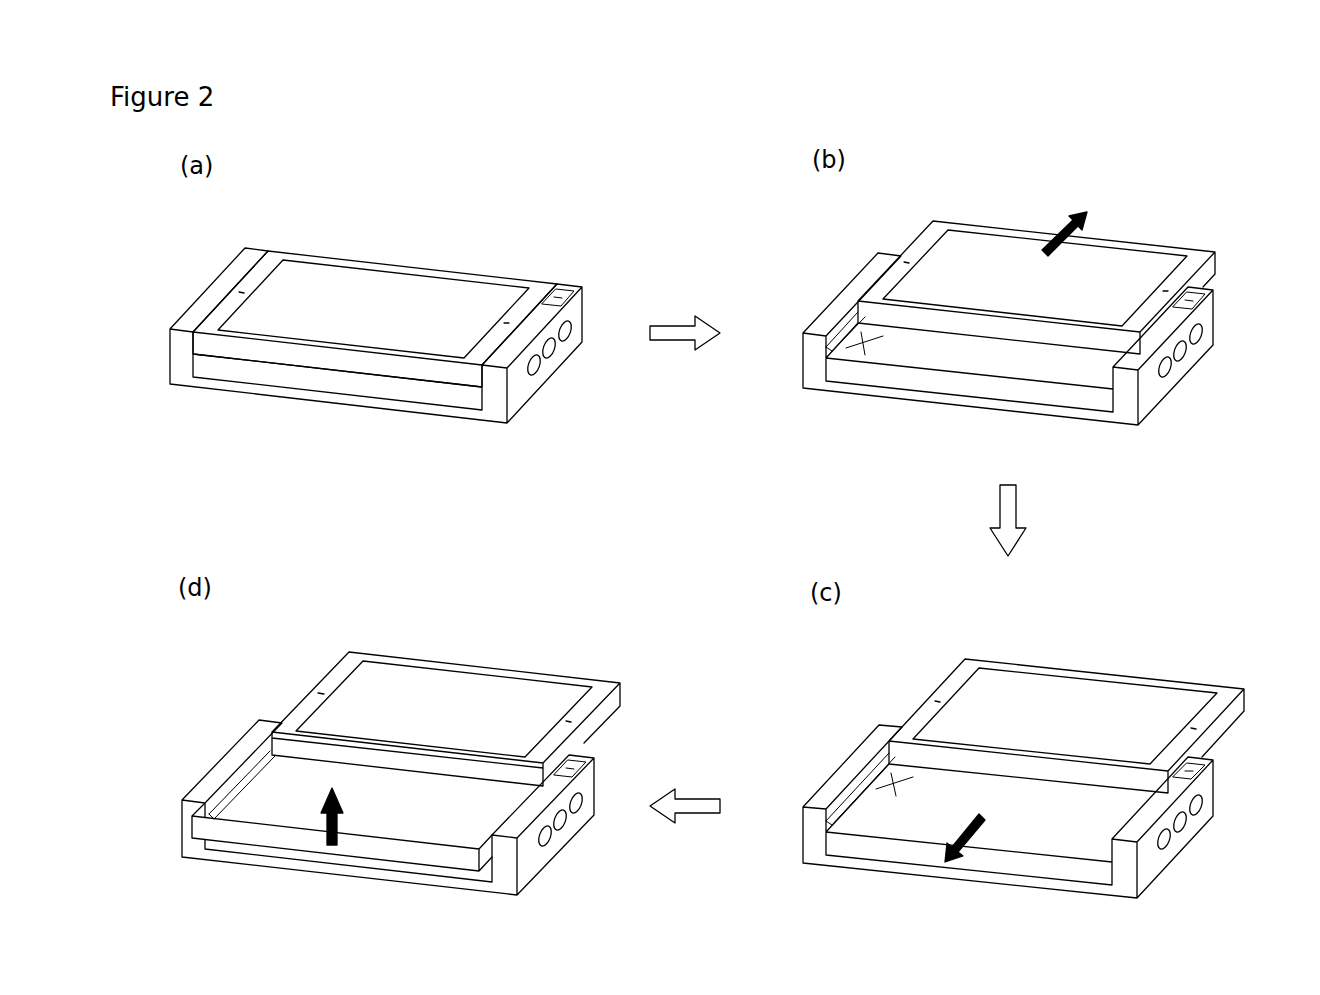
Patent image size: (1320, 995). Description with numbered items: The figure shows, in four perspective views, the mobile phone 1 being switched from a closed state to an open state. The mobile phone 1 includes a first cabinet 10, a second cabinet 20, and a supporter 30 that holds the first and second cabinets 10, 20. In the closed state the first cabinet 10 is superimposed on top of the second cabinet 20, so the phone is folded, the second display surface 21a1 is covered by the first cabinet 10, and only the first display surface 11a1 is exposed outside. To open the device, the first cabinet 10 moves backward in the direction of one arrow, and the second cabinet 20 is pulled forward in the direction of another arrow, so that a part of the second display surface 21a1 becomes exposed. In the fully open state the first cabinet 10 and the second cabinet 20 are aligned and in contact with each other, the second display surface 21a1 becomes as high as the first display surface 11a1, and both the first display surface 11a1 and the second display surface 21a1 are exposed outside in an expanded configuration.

The mobile phone 1 is at (377, 243).
The first cabinet 10 is at (527, 270).
The first display surface 11a1 is at (449, 290).
The second cabinet 20 is at (307, 380).
The second display surface 21a1 is at (840, 325).
The supporter 30 is at (592, 300).